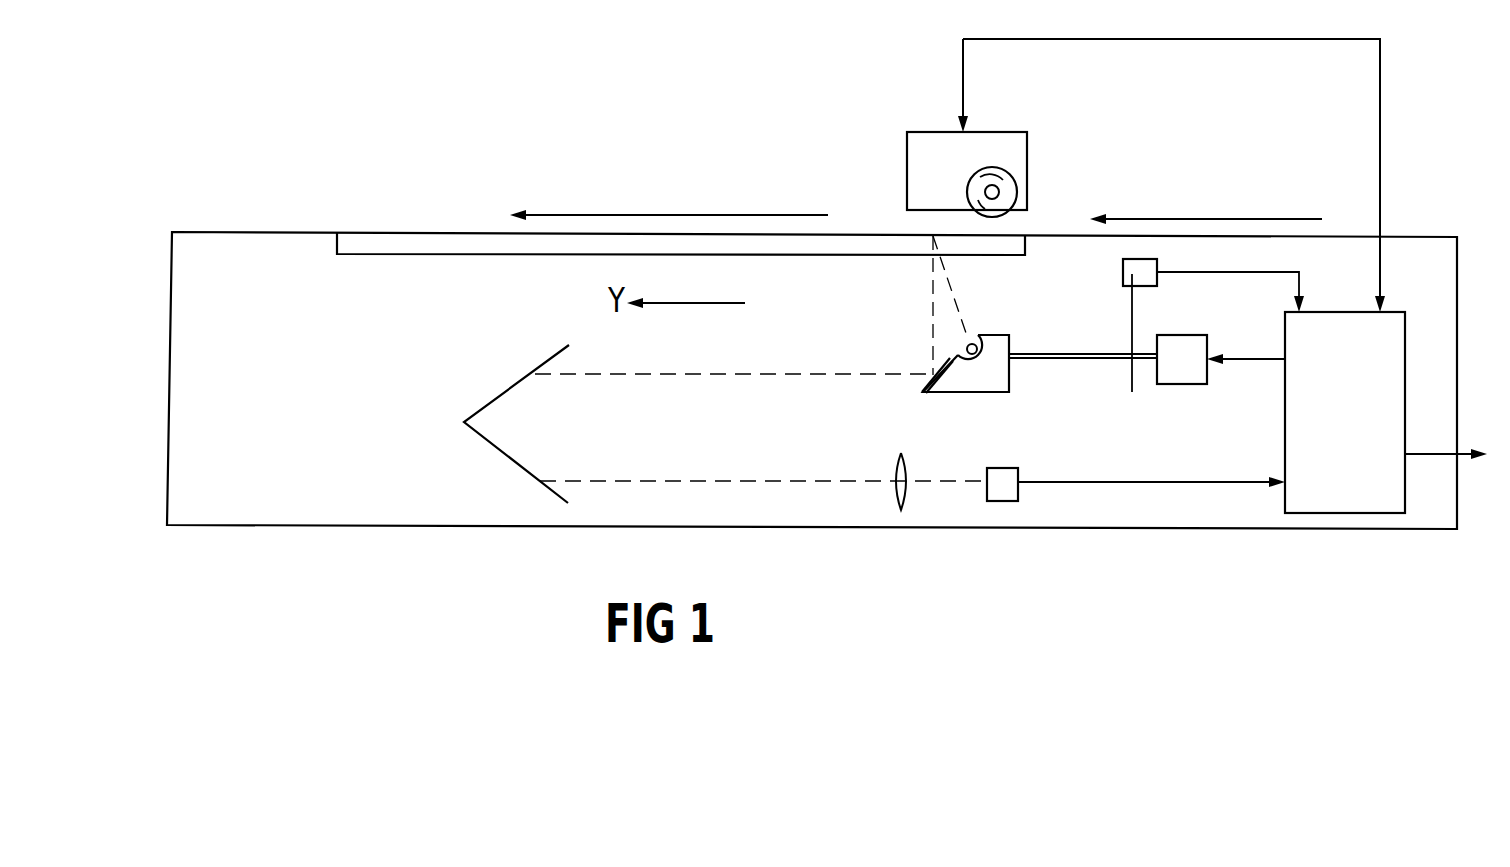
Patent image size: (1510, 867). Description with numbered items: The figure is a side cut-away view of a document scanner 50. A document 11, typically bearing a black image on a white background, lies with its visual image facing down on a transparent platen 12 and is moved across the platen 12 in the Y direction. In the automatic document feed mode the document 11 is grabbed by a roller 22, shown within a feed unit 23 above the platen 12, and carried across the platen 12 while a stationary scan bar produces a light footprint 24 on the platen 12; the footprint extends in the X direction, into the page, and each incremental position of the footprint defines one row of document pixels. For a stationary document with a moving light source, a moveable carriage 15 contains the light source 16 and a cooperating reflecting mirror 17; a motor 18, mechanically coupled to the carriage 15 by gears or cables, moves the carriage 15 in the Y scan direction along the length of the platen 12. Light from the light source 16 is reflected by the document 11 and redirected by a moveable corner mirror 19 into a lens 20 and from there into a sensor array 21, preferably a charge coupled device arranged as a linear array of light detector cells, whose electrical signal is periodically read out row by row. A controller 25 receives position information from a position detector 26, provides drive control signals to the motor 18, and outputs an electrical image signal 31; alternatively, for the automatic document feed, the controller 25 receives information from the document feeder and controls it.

The document 11 is at (681, 215).
The transparent platen 12 is at (380, 256).
The moveable carriage 15 is at (1010, 380).
The light source (scan bar) 16 is at (963, 337).
The reflecting mirror 17 is at (927, 388).
The motor 18 is at (1200, 368).
The moveable corner mirror 19 is at (551, 492).
The lens 20 is at (894, 486).
The sensor array 21 is at (1001, 501).
The roller 22 is at (1010, 172).
The transport drive unit 23 is at (922, 132).
The light footprint 24 is at (933, 237).
The controller 25 is at (1369, 436).
The position detector 26 is at (1158, 264).
The electrical image signal 31 is at (1474, 452).
The document scanner 50 is at (421, 576).